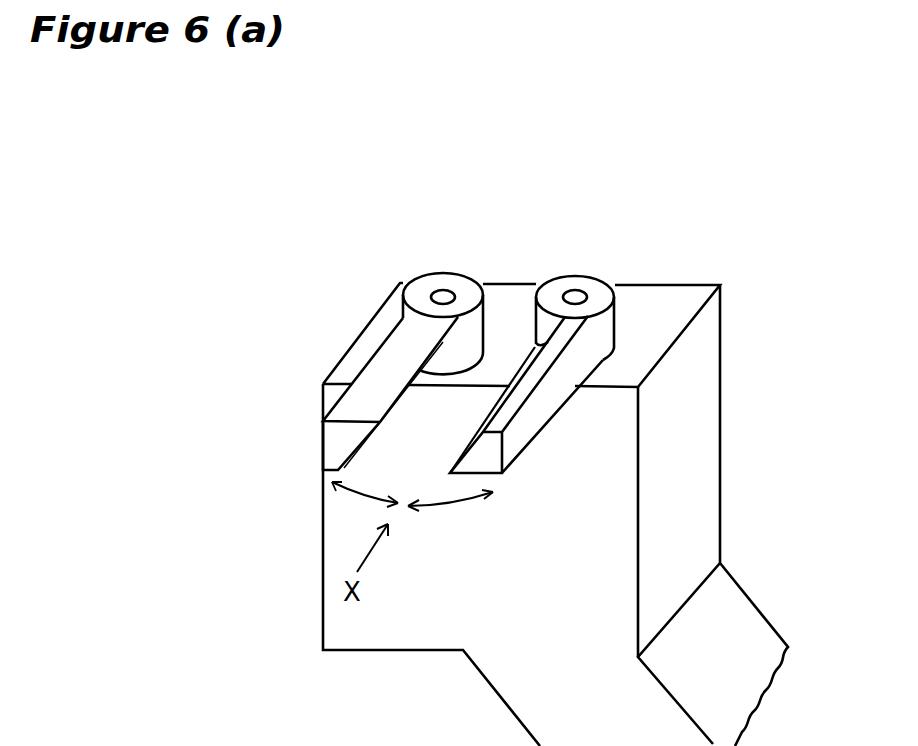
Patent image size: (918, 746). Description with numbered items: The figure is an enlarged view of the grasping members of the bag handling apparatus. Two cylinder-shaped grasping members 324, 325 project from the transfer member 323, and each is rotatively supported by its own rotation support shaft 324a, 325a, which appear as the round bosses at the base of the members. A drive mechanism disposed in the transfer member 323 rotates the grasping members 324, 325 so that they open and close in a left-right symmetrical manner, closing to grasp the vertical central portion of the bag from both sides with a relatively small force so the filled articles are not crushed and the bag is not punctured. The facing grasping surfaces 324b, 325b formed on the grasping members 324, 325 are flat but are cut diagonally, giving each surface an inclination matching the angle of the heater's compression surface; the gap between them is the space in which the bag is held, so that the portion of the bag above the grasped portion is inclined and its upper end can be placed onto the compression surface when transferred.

The transfer member 323 is at (518, 283).
The grasping member 324 is at (335, 402).
The rotation support shaft 324a is at (441, 290).
The grasping surface 324b is at (380, 421).
The grasping member 325 is at (540, 433).
The rotation support shaft 325a is at (586, 296).
The grasping surface 325b is at (453, 465).